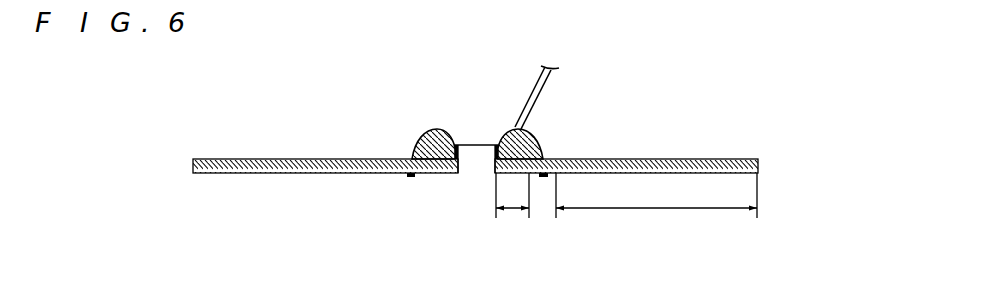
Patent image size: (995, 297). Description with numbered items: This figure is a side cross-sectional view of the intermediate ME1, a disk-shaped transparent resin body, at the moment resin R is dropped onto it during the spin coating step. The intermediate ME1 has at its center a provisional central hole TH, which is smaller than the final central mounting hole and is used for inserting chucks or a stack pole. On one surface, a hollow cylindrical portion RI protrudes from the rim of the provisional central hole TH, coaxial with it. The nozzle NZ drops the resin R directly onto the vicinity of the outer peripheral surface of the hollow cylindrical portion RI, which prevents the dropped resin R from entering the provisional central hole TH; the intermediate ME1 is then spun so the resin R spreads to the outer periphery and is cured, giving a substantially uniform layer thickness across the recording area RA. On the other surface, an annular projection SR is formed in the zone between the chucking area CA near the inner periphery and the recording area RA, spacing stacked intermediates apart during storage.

The intermediate ME1 is at (760, 165).
The provisional central hole TH is at (466, 173).
The hollow cylindrical portion RI is at (457, 144).
The resin R is at (535, 138).
The nozzle NZ is at (547, 85).
The annular projection SR is at (406, 178).
The chucking area CA is at (512, 207).
The recording area RA is at (656, 205).